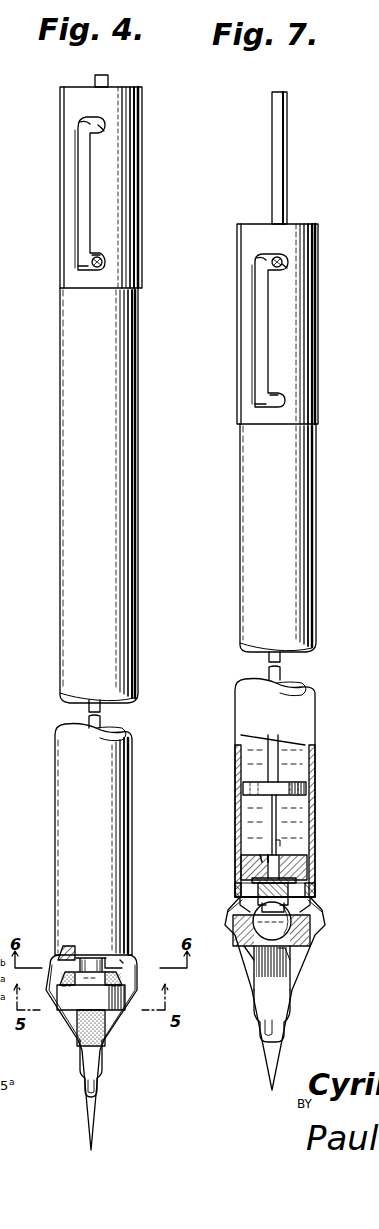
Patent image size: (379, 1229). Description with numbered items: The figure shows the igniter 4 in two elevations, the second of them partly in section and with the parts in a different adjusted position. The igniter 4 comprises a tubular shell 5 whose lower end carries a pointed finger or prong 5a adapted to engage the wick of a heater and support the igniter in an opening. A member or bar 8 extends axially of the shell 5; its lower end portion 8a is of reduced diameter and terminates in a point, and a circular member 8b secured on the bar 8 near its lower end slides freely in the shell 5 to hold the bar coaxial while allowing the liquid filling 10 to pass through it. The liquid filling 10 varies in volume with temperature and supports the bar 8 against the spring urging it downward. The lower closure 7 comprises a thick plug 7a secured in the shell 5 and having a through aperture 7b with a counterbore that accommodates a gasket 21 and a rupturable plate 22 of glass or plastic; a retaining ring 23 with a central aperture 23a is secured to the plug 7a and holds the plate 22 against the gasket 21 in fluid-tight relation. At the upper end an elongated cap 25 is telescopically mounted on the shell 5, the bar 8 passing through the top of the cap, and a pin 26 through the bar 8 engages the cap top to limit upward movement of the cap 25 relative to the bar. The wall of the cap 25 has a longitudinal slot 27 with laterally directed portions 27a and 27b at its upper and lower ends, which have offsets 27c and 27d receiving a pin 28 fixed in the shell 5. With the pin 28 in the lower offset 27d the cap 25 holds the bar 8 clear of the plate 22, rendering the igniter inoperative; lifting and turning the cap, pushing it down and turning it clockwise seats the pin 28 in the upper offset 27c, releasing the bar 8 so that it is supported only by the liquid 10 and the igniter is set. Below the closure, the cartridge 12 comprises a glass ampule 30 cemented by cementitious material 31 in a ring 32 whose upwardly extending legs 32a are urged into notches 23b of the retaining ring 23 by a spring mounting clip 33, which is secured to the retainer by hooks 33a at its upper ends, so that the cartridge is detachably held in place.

In FIG. 4, the igniter 4 is at (146, 488).
In FIG. 7, the igniter 4 is at (325, 519).
In FIG. 4, the tubular shell 5 is at (60, 546).
In FIG. 7, the tubular shell 5 is at (240, 554).
In FIG. 4, the pointed finger or prong 5a is at (95, 1112).
In FIG. 7, the pointed finger or prong 5a is at (268, 1050).
In FIG. 7, the closure 7 is at (315, 863).
In FIG. 7, the thick disc or plug 7a is at (262, 858).
In FIG. 7, the through aperture 7b is at (265, 858).
In FIG. 7, the member or bar 8 is at (268, 746).
In FIG. 7, the lower end portion of the bar 8a is at (281, 840).
In FIG. 7, the circular member 8b is at (245, 790).
In FIG. 7, the liquid filling 10 is at (298, 762).
In FIG. 4, the cartridge 12 is at (120, 1012).
In FIG. 7, the cartridge 12 is at (320, 936).
In FIG. 7, the gasket 21 is at (290, 880).
In FIG. 7, the rupturable member or plate 22 is at (260, 902).
In FIG. 4, the retaining ring 23 is at (115, 955).
In FIG. 7, the retaining ring 23 is at (294, 903).
In FIG. 7, the central aperture 23a is at (292, 906).
In FIG. 4, the notches 23b is at (122, 962).
In FIG. 4, the elongated cap 25 is at (132, 177).
In FIG. 7, the elongated cap 25 is at (305, 310).
In FIG. 4, the pin 26 is at (96, 82).
In FIG. 7, the pin 26 is at (270, 100).
In FIG. 4, the slot 27 is at (82, 210).
In FIG. 7, the slot 27 is at (258, 328).
In FIG. 4, the upper laterally directed portion of slot 27a is at (80, 124).
In FIG. 7, the upper laterally directed portion of slot 27a is at (258, 262).
In FIG. 4, the lower laterally directed portion of slot 27b is at (80, 270).
In FIG. 7, the lower laterally directed portion of slot 27b is at (258, 407).
In FIG. 4, the upper offset 27c is at (104, 128).
In FIG. 7, the upper offset 27c is at (288, 268).
In FIG. 4, the lower offset 27d is at (102, 258).
In FIG. 7, the lower offset 27d is at (283, 398).
In FIG. 4, the pin 28 is at (102, 266).
In FIG. 7, the pin 28 is at (283, 259).
In FIG. 7, the glass ampule 30 is at (290, 958).
In FIG. 4, the cementitious material 31 is at (70, 973).
In FIG. 7, the cementitious material 31 is at (250, 950).
In FIG. 4, the ring 32 is at (68, 1006).
In FIG. 7, the ring 32 is at (252, 948).
In FIG. 4, the upwardly extending legs 32a is at (88, 960).
In FIG. 4, the spring mounting clip 33 is at (114, 1046).
In FIG. 7, the spring mounting clip 33 is at (296, 974).
In FIG. 4, the hooks 33a is at (63, 948).
In FIG. 7, the hooks 33a is at (336, 890).